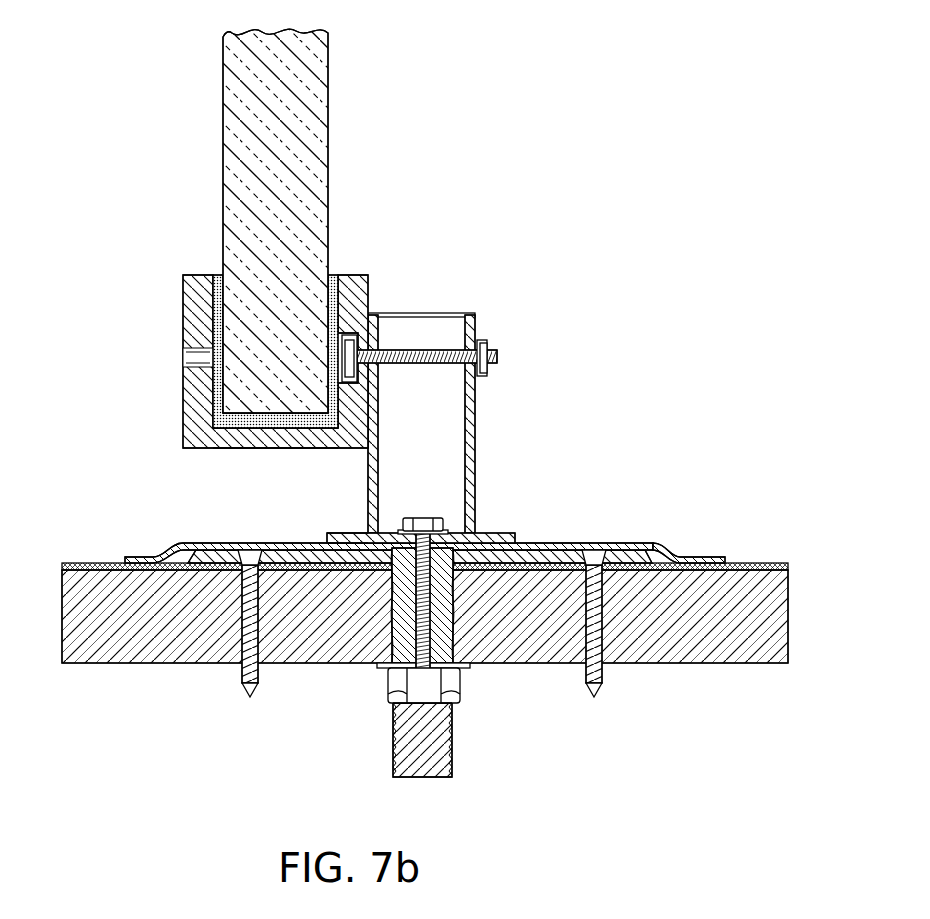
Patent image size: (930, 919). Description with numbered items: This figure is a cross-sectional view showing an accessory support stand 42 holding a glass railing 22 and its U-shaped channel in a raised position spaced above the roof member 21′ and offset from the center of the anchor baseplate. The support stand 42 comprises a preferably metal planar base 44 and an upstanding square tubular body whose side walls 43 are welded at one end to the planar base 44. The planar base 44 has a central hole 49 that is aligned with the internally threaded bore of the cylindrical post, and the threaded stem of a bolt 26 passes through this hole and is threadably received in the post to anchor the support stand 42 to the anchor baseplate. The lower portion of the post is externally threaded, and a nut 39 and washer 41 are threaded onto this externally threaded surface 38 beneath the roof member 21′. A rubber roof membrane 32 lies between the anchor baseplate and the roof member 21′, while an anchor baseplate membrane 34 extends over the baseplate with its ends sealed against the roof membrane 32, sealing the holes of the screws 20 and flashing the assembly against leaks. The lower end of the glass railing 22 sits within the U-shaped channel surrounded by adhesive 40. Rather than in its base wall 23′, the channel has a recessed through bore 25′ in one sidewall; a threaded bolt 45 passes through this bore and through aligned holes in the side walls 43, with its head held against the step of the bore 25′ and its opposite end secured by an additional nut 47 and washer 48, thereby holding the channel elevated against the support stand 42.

The glass railing 22 is at (318, 66).
The adhesive, caulk or glue 40 is at (337, 279).
The recessed through bore 25′ is at (349, 336).
The threaded bolt 45 is at (449, 309).
The washer 48 is at (479, 340).
The nut 47 is at (487, 345).
The sidewall 43 is at (476, 408).
The accessory support stand 42 is at (439, 428).
The base wall 23′ is at (234, 440).
The central hole 49 is at (396, 533).
The bolt 26 is at (422, 584).
The planar base 44 is at (495, 533).
The externally threaded surface 38 is at (664, 546).
The roof membrane 32 is at (71, 561).
The anchor baseplate membrane 34 is at (146, 556).
The screw 20 is at (243, 676).
The roof member 21′ is at (713, 674).
The washer 41 is at (392, 688).
The nut 39 is at (470, 668).